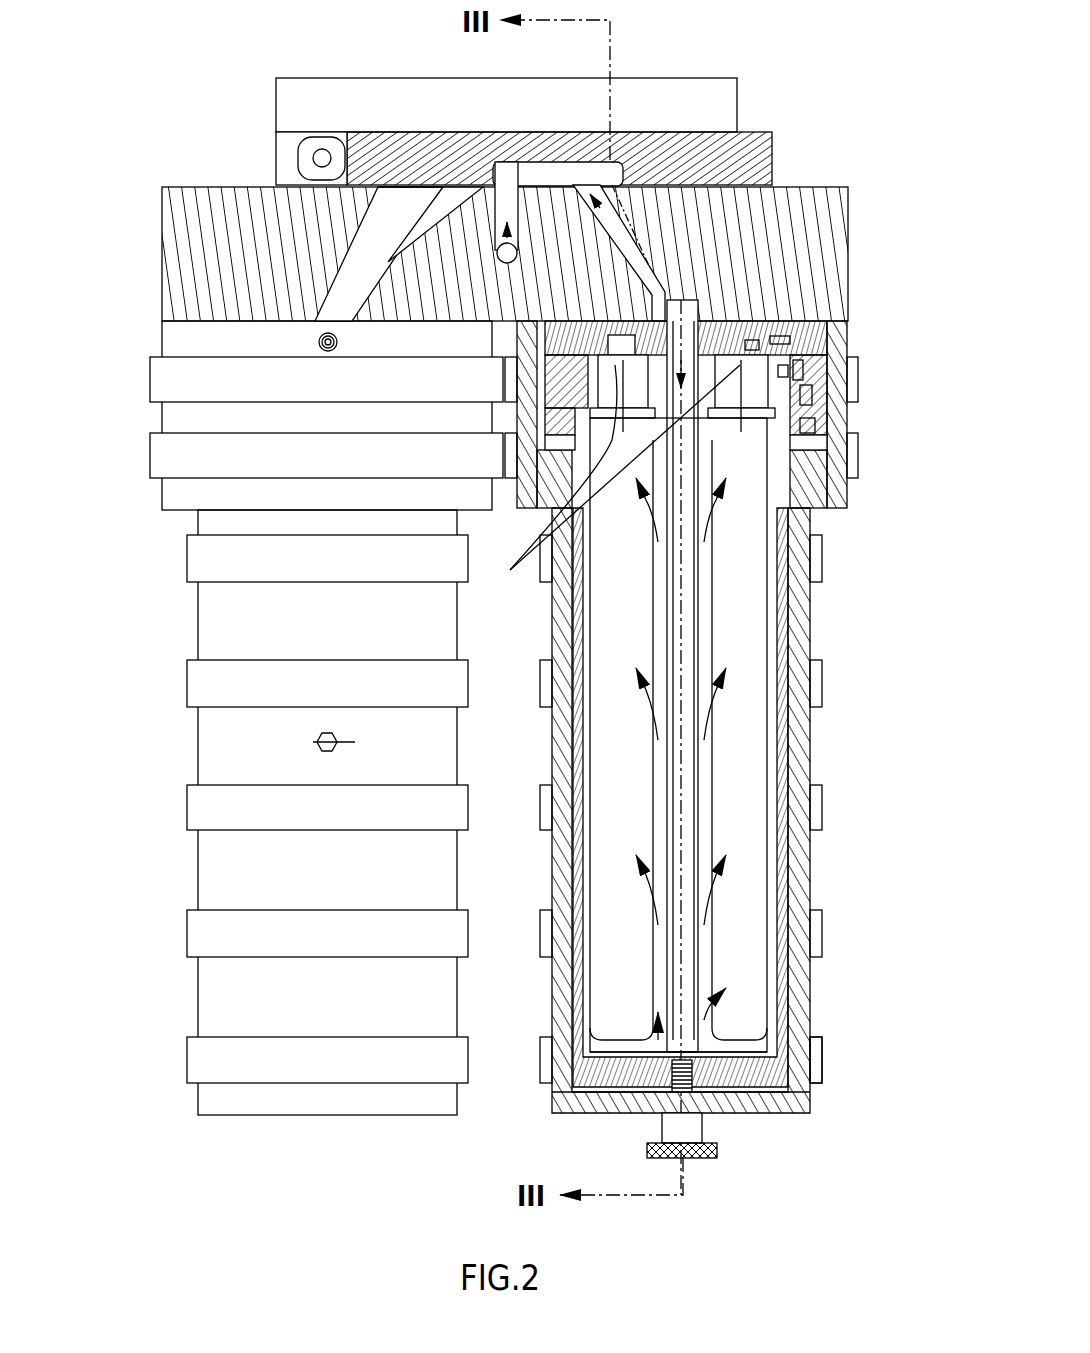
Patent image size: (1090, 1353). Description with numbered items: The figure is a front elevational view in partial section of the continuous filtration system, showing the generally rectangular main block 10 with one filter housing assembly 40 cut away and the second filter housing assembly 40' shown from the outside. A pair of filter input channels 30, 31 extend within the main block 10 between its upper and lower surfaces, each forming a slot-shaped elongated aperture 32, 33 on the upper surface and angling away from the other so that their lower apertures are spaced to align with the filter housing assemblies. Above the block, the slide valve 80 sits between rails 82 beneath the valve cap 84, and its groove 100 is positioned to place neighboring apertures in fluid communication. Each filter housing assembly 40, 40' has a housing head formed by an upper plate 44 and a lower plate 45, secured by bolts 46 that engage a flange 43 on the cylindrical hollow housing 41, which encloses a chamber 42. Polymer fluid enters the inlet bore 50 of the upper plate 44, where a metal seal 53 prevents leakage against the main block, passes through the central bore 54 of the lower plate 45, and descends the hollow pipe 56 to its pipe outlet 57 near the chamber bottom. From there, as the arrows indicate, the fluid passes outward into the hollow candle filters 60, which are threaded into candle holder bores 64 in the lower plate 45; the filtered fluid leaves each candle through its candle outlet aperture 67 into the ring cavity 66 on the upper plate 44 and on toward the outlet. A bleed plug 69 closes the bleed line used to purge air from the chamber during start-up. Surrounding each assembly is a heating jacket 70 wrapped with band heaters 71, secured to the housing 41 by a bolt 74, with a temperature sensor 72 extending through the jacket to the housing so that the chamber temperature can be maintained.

The main block 10 is at (162, 245).
The filter input channel 30 is at (700, 135).
The filter input channel 31 is at (375, 230).
The elongated aperture 32 is at (620, 185).
The elongated aperture 33 is at (405, 196).
The filter housing assembly 40 is at (707, 717).
The filter housing assembly 40' is at (287, 718).
The housing 41 is at (780, 1060).
The chamber 42 is at (760, 1045).
The flange 43 is at (810, 425).
The upper plate 44 is at (700, 345).
The lower plate 45 is at (798, 368).
The bolts 46 is at (805, 390).
The inlet bore 50 is at (690, 340).
The metal seal 53 is at (650, 330).
The central bore 54 is at (780, 340).
The hollow pipe 56 is at (760, 460).
The pipe outlet 57 is at (677, 1010).
The candle filters 60 is at (790, 650).
The candle holder bores 64 is at (615, 477).
The ring cavity 66 is at (615, 352).
The candle outlet aperture 67 is at (760, 345).
The bleed plug 69 is at (318, 343).
The heating jacket 70 is at (800, 1100).
The band heaters 71 is at (822, 1060).
The temperature sensor 72 is at (315, 742).
The bolt 74 is at (700, 1158).
The slide valve 80 is at (770, 145).
The rails 82 is at (276, 145).
The valve cap 84 is at (302, 78).
The groove 100 is at (550, 170).